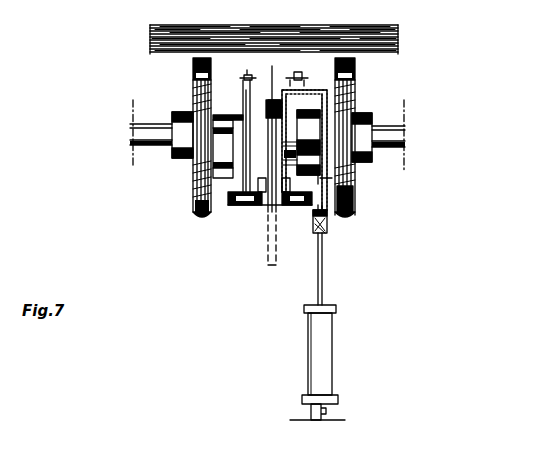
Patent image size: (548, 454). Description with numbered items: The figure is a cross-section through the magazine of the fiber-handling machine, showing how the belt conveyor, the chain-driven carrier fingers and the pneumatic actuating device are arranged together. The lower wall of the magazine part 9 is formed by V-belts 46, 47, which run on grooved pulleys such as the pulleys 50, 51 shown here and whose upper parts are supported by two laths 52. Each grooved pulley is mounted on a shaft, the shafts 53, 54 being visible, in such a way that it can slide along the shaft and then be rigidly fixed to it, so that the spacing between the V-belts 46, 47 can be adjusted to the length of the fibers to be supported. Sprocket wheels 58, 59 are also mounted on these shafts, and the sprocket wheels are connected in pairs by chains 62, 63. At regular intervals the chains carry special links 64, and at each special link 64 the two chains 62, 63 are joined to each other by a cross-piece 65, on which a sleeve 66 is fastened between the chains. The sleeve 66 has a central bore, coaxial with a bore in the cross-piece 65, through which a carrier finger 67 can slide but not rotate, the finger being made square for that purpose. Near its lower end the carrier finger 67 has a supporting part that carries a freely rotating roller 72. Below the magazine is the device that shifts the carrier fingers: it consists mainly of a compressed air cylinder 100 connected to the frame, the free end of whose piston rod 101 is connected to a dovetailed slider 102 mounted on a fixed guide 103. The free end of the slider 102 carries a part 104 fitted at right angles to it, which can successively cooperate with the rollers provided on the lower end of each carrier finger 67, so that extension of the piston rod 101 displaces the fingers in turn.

The magazine part 9 is at (416, 39).
The V-belt 46 is at (203, 216).
The V-belt 47 is at (352, 216).
The grooved pulley 50 is at (196, 180).
The grooved pulley 51 is at (354, 196).
The lath 52 is at (195, 70).
The shaft 53 is at (151, 141).
The shaft 54 is at (405, 131).
The sprocket wheel 58 is at (241, 162).
The sprocket wheel 59 is at (312, 108).
The chain 62 is at (249, 79).
The chain 63 is at (294, 79).
The special link 64 is at (228, 136).
The cross-piece 65 is at (250, 208).
The sleeve 66 is at (265, 206).
The carrier finger 67 is at (277, 208).
The freely rotating roller 72 is at (271, 159).
The compressed air cylinder 100 is at (316, 362).
The piston rod 101 is at (318, 274).
The dovetailed slider 102 is at (327, 220).
The fixed guide 103 is at (320, 181).
The part 104 is at (346, 90).